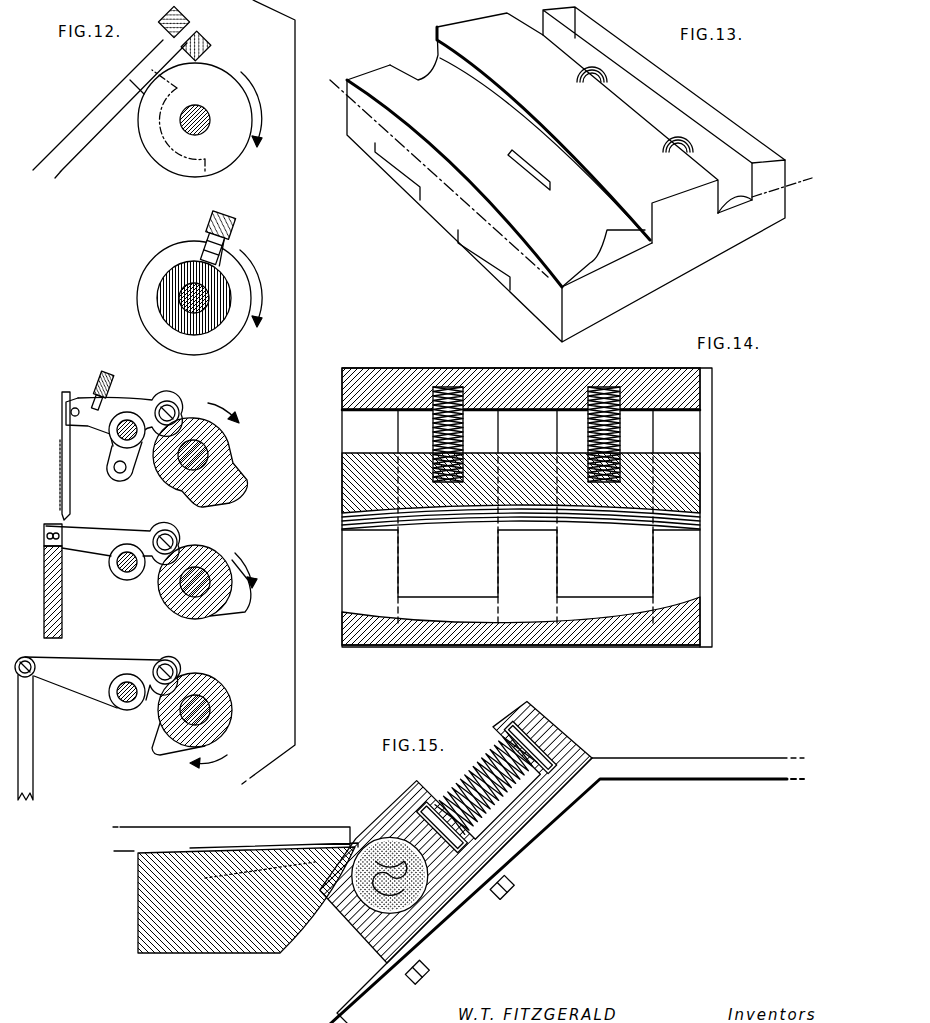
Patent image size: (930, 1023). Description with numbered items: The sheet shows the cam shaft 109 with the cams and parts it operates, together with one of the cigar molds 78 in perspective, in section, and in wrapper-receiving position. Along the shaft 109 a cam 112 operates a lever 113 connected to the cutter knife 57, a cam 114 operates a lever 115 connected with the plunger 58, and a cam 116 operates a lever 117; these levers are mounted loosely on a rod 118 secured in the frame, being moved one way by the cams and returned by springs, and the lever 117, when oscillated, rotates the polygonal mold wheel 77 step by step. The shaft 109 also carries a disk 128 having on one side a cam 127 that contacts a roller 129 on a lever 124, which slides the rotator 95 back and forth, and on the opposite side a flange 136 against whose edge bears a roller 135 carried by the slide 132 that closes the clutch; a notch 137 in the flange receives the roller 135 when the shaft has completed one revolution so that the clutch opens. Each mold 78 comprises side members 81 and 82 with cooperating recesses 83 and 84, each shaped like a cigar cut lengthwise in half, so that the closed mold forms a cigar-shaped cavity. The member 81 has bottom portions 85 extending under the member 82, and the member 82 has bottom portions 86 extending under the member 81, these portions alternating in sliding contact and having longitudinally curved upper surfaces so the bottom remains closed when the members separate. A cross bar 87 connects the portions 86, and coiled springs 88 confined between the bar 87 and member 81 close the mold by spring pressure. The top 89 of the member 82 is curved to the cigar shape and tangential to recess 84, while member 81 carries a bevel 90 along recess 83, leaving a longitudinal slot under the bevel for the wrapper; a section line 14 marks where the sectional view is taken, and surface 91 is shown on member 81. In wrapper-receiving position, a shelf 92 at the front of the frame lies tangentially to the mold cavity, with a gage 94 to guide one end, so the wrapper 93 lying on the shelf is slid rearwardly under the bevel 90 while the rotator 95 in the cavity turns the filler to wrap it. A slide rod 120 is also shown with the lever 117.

In FIG. 13, the section line 14 is at (340, 88).
In FIG. 12, the cutter knife 57 is at (58, 467).
In FIG. 12, the plunger 58 is at (62, 598).
In FIG. 15, the polygonal wheel 77 is at (652, 760).
In FIG. 13, the mold 78 is at (374, 64).
In FIG. 14, the mold 78 is at (719, 435).
In FIG. 15, the mold 78 is at (376, 813).
In FIG. 13, the side member 81 is at (680, 213).
In FIG. 14, the side member 81 is at (700, 485).
In FIG. 15, the side member 81 is at (422, 790).
In FIG. 13, the side member 82 is at (412, 160).
In FIG. 14, the side member 82 is at (700, 625).
In FIG. 15, the side member 82 is at (352, 922).
In FIG. 13, the recess 83 is at (576, 215).
In FIG. 14, the recess 83 is at (700, 506).
In FIG. 15, the recess 83 is at (420, 878).
In FIG. 14, the recess 84 is at (450, 632).
In FIG. 15, the recess 84 is at (430, 927).
In FIG. 13, the bottom portions 85 is at (467, 250).
In FIG. 14, the bottom portions 85 is at (526, 569).
In FIG. 15, the bottom portions 85 is at (513, 825).
In FIG. 13, the bottom portions 86 is at (752, 230).
In FIG. 14, the bottom portions 86 is at (521, 563).
In FIG. 13, the cross bar 87 is at (752, 150).
In FIG. 14, the cross bar 87 is at (520, 370).
In FIG. 15, the cross bar 87 is at (548, 737).
In FIG. 13, the coiled springs 88 is at (693, 137).
In FIG. 14, the coiled springs 88 is at (446, 386).
In FIG. 15, the coiled springs 88 is at (490, 748).
In FIG. 13, the top 89 is at (454, 157).
In FIG. 15, the top 89 is at (338, 902).
In FIG. 13, the bevel 90 is at (608, 182).
In FIG. 15, the bevel 90 is at (358, 840).
In FIG. 13, the sloped face 91 is at (604, 132).
In FIG. 15, the sloped face 91 is at (395, 800).
In FIG. 15, the shelf 92 is at (208, 930).
In FIG. 15, the wrapper 93 is at (285, 846).
In FIG. 15, the gage 94 is at (237, 832).
In FIG. 15, the rotator 95 is at (425, 892).
In FIG. 12, the cam shaft 109 is at (200, 108).
In FIG. 12, the cam 112 is at (237, 460).
In FIG. 12, the lever 113 is at (102, 412).
In FIG. 12, the cam 114 is at (227, 613).
In FIG. 12, the lever 115 is at (152, 536).
In FIG. 12, the cam 116 is at (153, 758).
In FIG. 12, the lever 117 is at (102, 676).
In FIG. 12, the rod 118 is at (114, 452).
In FIG. 12, the slide rod 120 is at (30, 740).
In FIG. 12, the lever 124 is at (88, 122).
In FIG. 12, the cam 127 is at (167, 147).
In FIG. 12, the disk 128 is at (236, 158).
In FIG. 12, the roller 129 is at (140, 88).
In FIG. 12, the slide 132 is at (236, 212).
In FIG. 12, the roller 135 is at (200, 243).
In FIG. 12, the flange 136 is at (150, 278).
In FIG. 12, the notch 137 is at (228, 256).